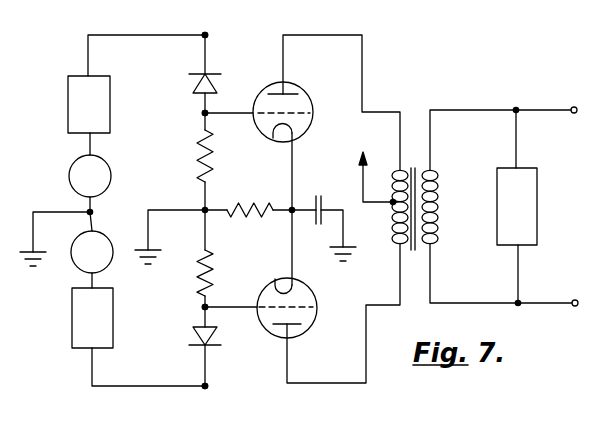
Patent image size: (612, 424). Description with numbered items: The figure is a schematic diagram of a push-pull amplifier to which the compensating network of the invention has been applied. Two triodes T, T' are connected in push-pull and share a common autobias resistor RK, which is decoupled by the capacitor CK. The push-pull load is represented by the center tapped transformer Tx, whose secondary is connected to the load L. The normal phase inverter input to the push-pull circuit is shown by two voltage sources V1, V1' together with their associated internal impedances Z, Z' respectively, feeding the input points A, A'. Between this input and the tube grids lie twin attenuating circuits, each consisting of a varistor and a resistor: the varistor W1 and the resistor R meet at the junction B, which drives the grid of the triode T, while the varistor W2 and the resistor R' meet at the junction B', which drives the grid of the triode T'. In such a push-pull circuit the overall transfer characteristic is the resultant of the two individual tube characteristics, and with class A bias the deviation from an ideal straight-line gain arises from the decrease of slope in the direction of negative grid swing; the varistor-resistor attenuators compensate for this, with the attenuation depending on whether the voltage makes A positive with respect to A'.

The internal impedance Z is at (89, 104).
The voltage source V1 is at (90, 165).
The voltage source V1' is at (92, 252).
The internal impedance Z' is at (92, 318).
The terminal A is at (210, 29).
The terminal A' is at (213, 393).
The varistor W1 is at (199, 82).
The varistor W2 is at (198, 331).
The junction point B is at (195, 113).
The junction point B' is at (195, 307).
The resistor R is at (192, 156).
The resistor R' is at (194, 273).
The autobias resistor RK is at (233, 206).
The decoupling capacitor CK is at (313, 202).
The triode T is at (287, 108).
The triode T' is at (290, 305).
The center tapped transformer Tx is at (413, 166).
The load L is at (517, 206).